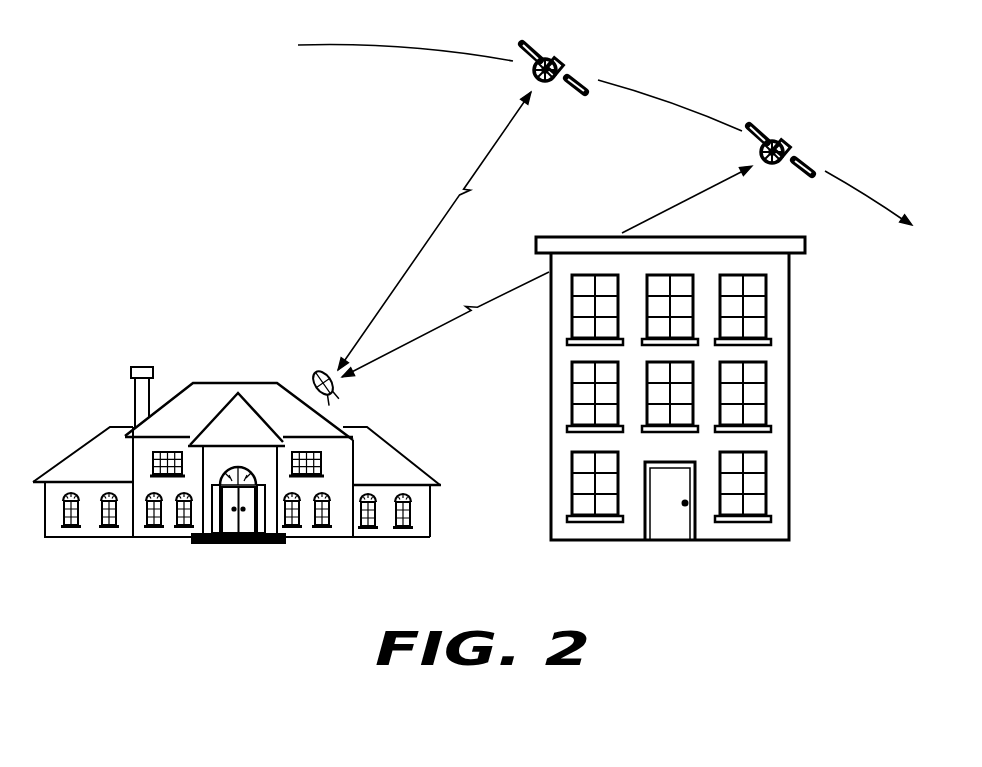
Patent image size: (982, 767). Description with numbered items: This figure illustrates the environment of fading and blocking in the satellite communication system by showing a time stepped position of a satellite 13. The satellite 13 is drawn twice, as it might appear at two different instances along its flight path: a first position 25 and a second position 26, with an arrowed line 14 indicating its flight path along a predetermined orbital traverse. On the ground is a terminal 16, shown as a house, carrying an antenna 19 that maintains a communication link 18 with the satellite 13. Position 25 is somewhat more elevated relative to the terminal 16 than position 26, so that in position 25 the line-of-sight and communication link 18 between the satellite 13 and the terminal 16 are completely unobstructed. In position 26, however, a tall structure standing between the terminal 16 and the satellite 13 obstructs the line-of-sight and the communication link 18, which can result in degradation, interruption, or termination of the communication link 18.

The satellite 13 is at (679, 90).
The arrowed line 14 is at (385, 47).
The terminal 16 is at (413, 458).
The communication link 18 is at (483, 157).
The antenna 19 is at (308, 373).
The position 25 is at (562, 56).
The position 26 is at (795, 133).